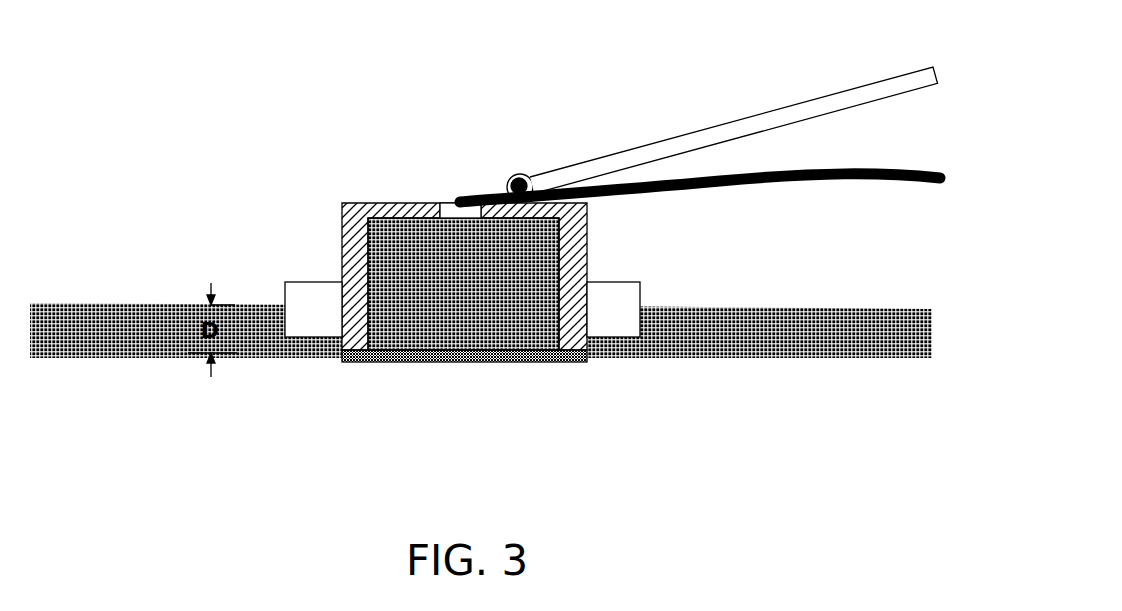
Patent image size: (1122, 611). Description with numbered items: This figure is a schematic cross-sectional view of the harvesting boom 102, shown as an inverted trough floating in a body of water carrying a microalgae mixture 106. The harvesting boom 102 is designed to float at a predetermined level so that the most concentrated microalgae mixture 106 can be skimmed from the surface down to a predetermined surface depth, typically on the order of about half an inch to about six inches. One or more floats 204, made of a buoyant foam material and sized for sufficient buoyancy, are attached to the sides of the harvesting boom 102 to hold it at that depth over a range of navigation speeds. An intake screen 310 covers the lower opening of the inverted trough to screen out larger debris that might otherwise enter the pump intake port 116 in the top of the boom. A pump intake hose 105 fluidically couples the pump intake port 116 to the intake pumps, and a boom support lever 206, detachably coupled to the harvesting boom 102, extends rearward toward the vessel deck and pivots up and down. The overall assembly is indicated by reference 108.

The sensor assembly 108 is at (127, 273).
The harvesting boom 102 is at (375, 202).
The microalgae mixture 106 is at (428, 262).
The pump intake port 116 is at (455, 210).
The boom support lever 206 is at (720, 123).
The pump intake hose 105 is at (758, 189).
The float 204 is at (307, 312).
The intake screen 310 is at (512, 360).